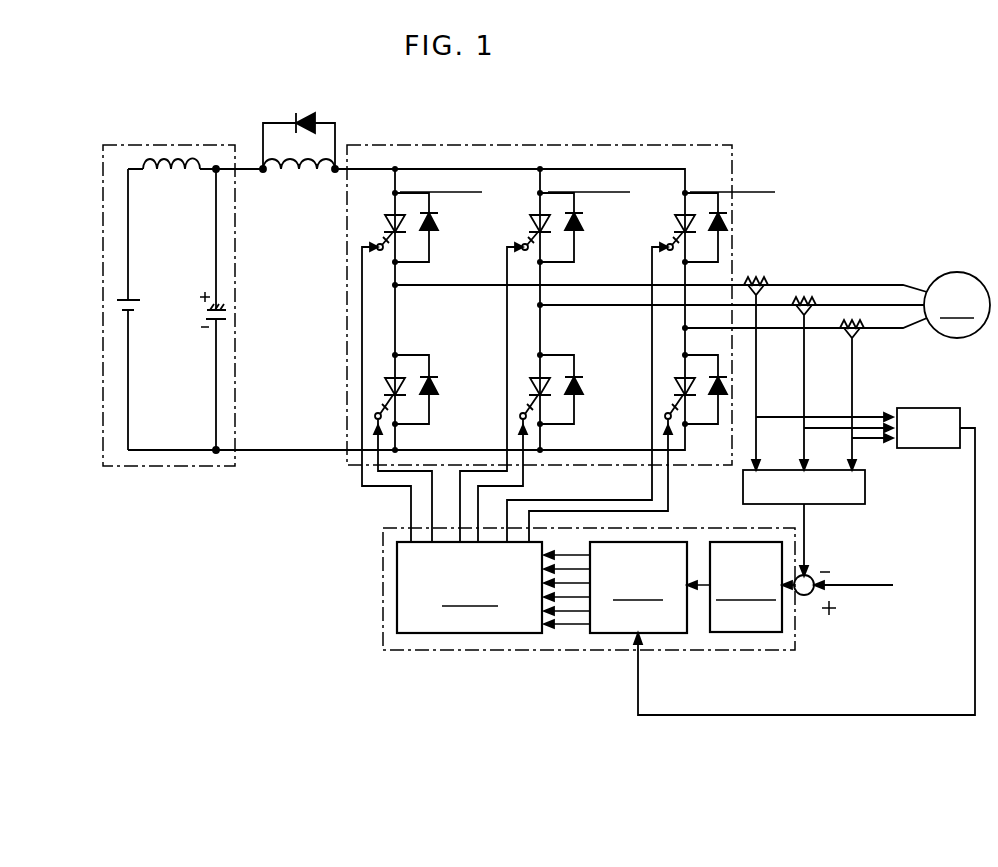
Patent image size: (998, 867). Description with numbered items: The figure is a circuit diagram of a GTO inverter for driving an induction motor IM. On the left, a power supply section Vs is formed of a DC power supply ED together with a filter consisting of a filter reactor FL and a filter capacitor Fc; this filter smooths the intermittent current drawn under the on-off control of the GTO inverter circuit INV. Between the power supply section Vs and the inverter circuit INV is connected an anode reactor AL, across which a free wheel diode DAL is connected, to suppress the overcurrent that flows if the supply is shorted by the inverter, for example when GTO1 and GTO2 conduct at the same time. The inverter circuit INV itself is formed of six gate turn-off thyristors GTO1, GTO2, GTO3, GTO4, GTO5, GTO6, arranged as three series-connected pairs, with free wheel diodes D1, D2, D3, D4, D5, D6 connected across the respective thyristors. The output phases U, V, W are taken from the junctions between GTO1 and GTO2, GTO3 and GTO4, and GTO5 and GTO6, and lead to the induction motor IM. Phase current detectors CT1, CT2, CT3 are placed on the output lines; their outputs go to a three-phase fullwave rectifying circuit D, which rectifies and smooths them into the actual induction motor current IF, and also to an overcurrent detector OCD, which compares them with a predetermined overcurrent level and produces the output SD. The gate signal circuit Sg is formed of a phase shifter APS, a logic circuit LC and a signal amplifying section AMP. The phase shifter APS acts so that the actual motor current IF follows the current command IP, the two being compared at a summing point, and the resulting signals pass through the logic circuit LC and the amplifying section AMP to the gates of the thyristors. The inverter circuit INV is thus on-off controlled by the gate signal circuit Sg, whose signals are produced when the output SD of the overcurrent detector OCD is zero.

The power supply section Vs is at (176, 145).
The filter reactor FL is at (173, 178).
The DC power supply ED is at (136, 300).
The filter capacitor Fc is at (204, 322).
The free wheel diode DAL is at (303, 120).
The anode reactor AL is at (290, 180).
The GTO inverter circuit INV is at (652, 145).
The gate turn-off thyristor GTO1 is at (370, 241).
The gate turn-off thyristor GTO2 is at (371, 388).
The gate turn-off thyristor GTO3 is at (529, 237).
The gate turn-off thyristor GTO4 is at (518, 383).
The gate turn-off thyristor GTO5 is at (675, 237).
The gate turn-off thyristor GTO6 is at (664, 385).
The free wheel diode D1 is at (440, 225).
The free wheel diode D2 is at (438, 388).
The free wheel diode D3 is at (585, 225).
The free wheel diode D4 is at (584, 388).
The free wheel diode D5 is at (728, 228).
The free wheel diode D6 is at (724, 394).
The U-phase output U is at (661, 274).
The V-phase output V is at (732, 295).
The W-phase output W is at (806, 335).
The induction motor IM is at (957, 305).
The phase current detector CT1 is at (758, 262).
The phase current detector CT2 is at (804, 299).
The phase current detector CT3 is at (866, 333).
The overcurrent detector OCD is at (928, 428).
The three-phase fullwave rectifying circuit D is at (804, 523).
The actual induction motor current IF is at (821, 545).
The current command IP is at (853, 602).
The signal amplifying section AMP is at (469, 587).
The logic circuit LC is at (615, 587).
The phase shifter APS is at (740, 587).
The gate signal circuit Sg is at (696, 650).
The overcurrent detector output SD is at (822, 715).